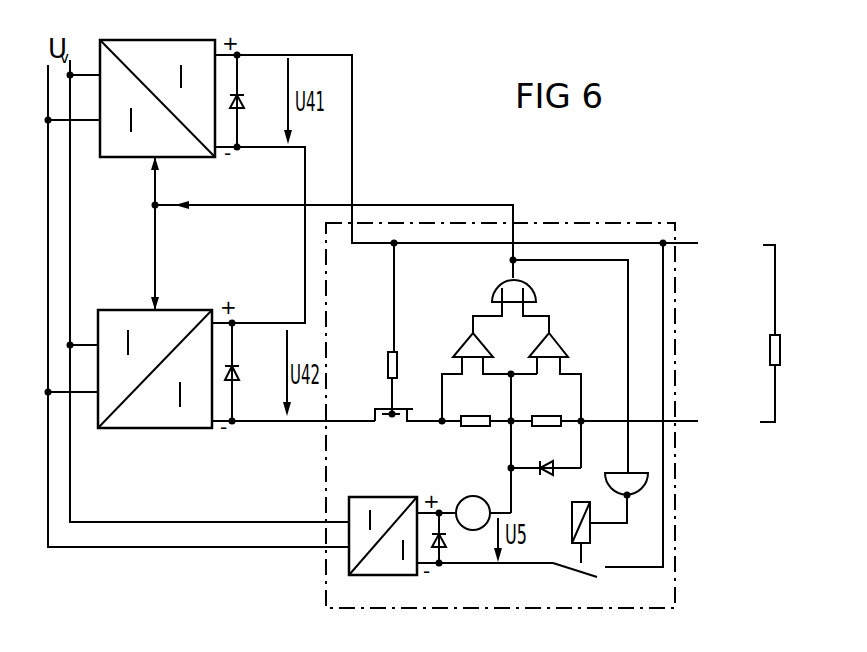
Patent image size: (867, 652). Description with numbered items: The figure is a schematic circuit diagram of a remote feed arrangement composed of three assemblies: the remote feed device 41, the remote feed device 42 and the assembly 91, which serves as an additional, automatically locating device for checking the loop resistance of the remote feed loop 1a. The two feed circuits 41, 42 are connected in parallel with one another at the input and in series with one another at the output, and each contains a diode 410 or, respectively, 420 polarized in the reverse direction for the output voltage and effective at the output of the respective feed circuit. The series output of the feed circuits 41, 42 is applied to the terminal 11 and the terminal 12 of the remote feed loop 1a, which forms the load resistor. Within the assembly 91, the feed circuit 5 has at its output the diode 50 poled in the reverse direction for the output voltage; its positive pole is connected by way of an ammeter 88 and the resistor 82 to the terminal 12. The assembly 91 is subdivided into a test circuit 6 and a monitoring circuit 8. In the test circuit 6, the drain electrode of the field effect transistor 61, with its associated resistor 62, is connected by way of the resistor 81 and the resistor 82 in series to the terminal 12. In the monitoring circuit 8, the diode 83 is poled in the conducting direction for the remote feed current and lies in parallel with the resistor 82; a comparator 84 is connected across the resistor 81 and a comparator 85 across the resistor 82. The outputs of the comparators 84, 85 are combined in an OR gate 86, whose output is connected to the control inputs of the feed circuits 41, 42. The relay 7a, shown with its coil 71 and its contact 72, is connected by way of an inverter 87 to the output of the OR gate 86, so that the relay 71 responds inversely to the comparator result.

The feed circuit 41 is at (157, 115).
The diode 410 is at (389, 264).
The feed circuit 42 is at (155, 354).
The diode 420 is at (220, 351).
The feed circuit 5 is at (383, 522).
The diode 50 is at (454, 539).
The ammeter 88 is at (473, 500).
The test circuit 6 is at (372, 326).
The field effect transistor 61 is at (382, 405).
The resistor 62 is at (407, 369).
The monitoring circuit 8 is at (600, 309).
The resistor 81 is at (475, 407).
The resistor 82 is at (546, 407).
The diode 83 is at (546, 455).
The comparator 84 is at (483, 376).
The comparator 85 is at (560, 400).
The OR gate 86 is at (507, 304).
The inverter 87 is at (619, 481).
The relay 7a is at (601, 424).
The relay 71 is at (595, 533).
The relay contact 72 is at (539, 543).
The assembly 91 is at (617, 223).
The terminal 11 is at (736, 278).
The terminal 12 is at (733, 405).
The remote feed loop 1a is at (762, 349).